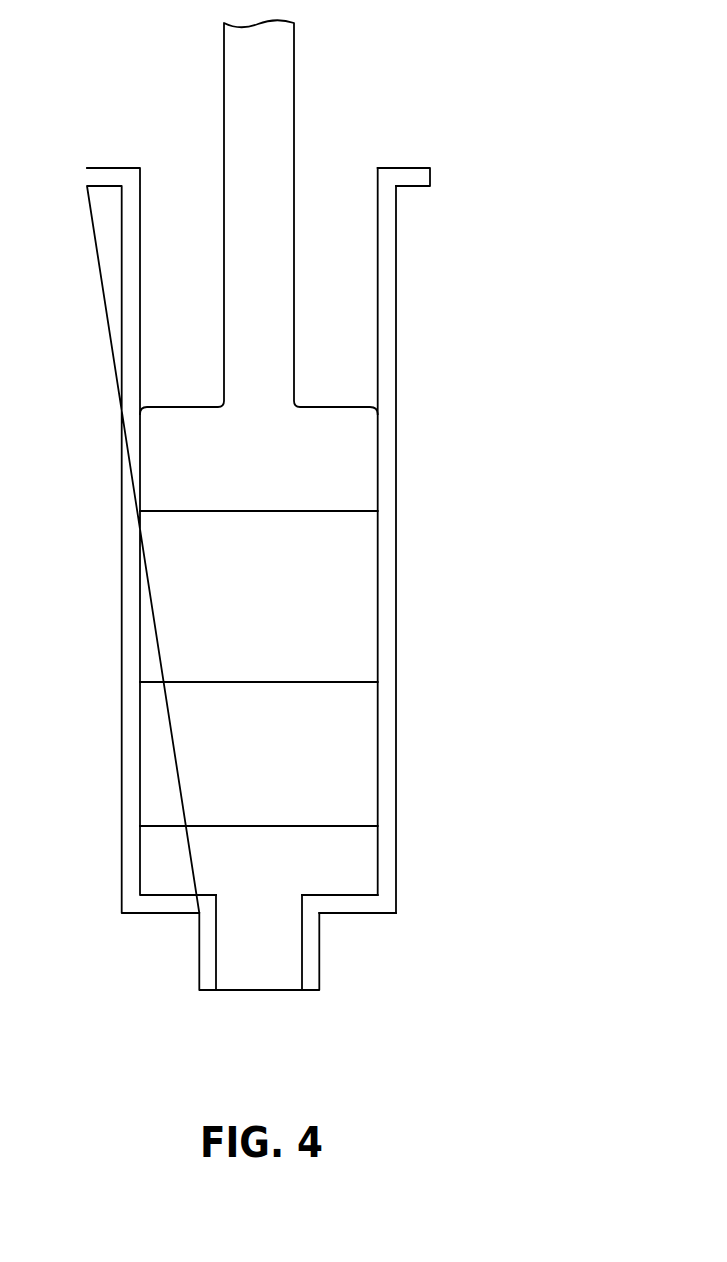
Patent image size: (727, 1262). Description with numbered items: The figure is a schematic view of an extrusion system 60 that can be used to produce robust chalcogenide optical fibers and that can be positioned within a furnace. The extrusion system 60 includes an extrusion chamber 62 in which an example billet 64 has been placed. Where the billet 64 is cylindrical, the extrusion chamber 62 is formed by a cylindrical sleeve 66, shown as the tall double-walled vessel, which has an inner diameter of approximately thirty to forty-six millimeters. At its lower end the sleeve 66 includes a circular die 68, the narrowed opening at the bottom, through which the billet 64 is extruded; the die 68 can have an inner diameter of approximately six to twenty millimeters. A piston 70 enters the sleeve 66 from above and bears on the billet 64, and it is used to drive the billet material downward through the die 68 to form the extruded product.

The extrusion system 60 is at (586, 153).
The extrusion chamber 62 is at (482, 253).
The billet 64 is at (98, 512).
The cylindrical sleeve 66 is at (387, 661).
The circular die 68 is at (365, 977).
The piston 70 is at (242, 323).